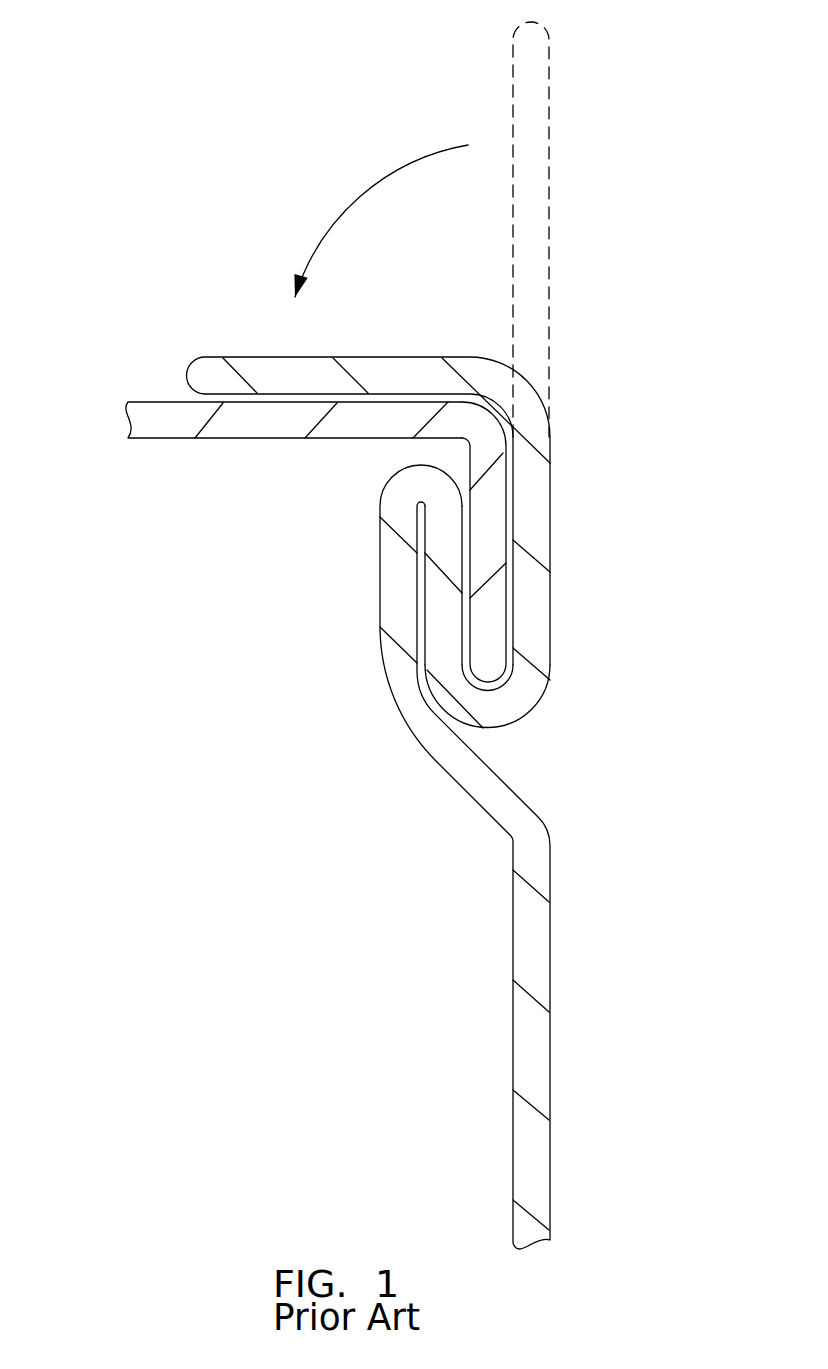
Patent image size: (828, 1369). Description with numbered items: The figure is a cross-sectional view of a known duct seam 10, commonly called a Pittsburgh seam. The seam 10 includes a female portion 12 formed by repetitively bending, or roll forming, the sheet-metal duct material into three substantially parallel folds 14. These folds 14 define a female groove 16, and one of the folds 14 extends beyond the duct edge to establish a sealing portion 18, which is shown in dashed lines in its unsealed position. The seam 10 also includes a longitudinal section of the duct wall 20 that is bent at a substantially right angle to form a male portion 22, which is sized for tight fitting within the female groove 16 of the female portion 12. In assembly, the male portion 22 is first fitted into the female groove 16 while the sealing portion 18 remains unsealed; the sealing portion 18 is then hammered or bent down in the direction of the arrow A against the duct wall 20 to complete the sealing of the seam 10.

The duct seam 10 is at (247, 218).
The female portion 12 is at (532, 540).
The folds 14 is at (372, 375).
The female groove 16 is at (510, 678).
The sealing portion 18 is at (549, 290).
The duct wall 20 is at (197, 427).
The male portion 22 is at (492, 500).
The arrow A is at (390, 177).